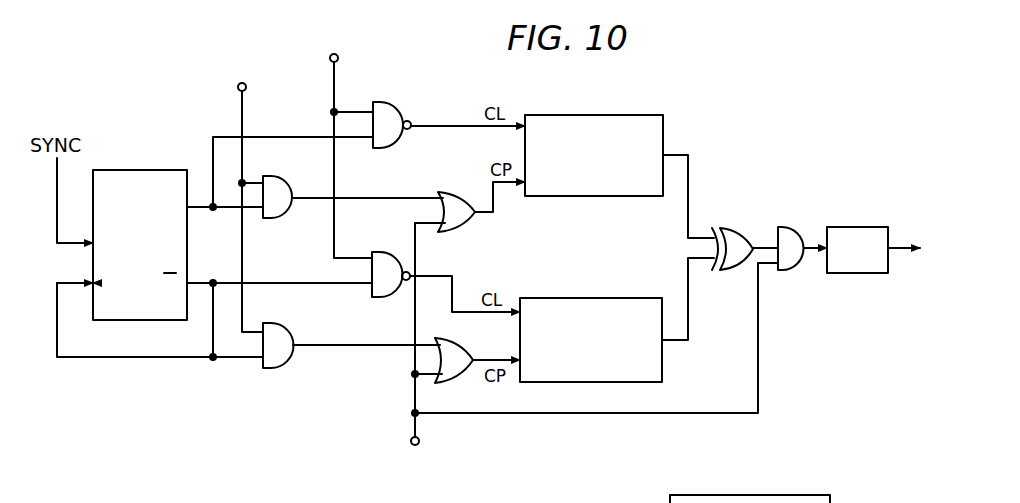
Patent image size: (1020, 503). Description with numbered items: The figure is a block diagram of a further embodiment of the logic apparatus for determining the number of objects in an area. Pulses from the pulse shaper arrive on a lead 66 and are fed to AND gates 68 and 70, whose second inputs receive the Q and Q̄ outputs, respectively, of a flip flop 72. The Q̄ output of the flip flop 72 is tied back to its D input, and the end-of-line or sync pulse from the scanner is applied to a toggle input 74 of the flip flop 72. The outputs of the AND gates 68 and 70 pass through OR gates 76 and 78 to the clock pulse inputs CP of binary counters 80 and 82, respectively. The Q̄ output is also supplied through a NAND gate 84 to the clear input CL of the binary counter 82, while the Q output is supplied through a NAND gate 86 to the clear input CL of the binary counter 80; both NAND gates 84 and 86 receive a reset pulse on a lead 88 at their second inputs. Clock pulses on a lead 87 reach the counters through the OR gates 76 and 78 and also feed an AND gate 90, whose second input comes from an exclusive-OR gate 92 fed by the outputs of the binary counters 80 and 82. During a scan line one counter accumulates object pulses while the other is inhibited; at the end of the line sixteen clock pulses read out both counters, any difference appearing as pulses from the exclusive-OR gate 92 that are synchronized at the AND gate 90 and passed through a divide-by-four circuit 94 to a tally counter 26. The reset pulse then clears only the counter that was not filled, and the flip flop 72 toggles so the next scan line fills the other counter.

The flip flop 72 is at (140, 170).
The toggle input 74 is at (70, 246).
The lead 66 is at (240, 110).
The lead 88 is at (333, 91).
The NAND gate 86 is at (396, 103).
The AND gate 68 is at (287, 184).
The NAND gate 84 is at (387, 251).
The AND gate 70 is at (287, 327).
The OR gate 76 is at (460, 192).
The OR gate 78 is at (468, 349).
The binary counter 80 is at (606, 115).
The binary counter 82 is at (628, 298).
The exclusive-OR gate 92 is at (739, 229).
The AND gate 90 is at (788, 273).
The divide-by-four circuit 94 is at (860, 275).
The lead 87 is at (412, 418).
The tally counter 26 is at (897, 246).